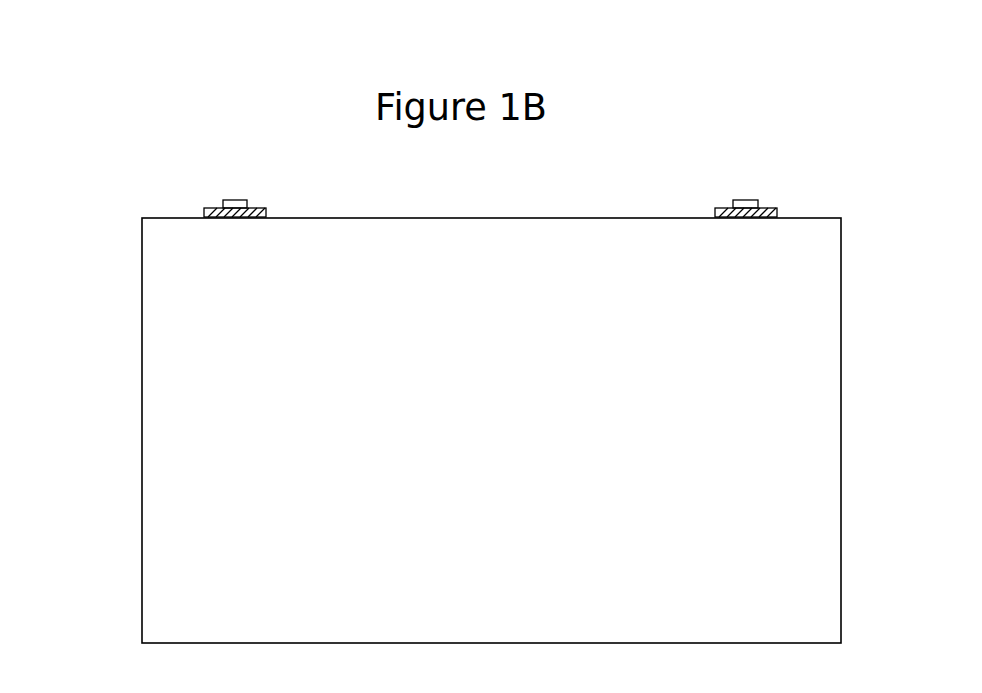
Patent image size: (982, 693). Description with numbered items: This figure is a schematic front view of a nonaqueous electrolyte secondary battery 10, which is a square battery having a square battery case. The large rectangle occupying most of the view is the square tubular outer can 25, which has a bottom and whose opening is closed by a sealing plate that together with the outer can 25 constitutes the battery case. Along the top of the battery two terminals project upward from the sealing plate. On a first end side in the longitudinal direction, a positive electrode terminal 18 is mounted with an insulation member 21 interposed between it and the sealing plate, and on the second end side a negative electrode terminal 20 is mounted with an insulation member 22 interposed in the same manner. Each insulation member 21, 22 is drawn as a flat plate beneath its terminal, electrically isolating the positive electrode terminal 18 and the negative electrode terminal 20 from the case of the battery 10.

The nonaqueous electrolyte secondary battery 10 is at (101, 225).
The positive electrode terminal 18 is at (740, 200).
The negative electrode terminal 20 is at (225, 200).
The insulation member 21 is at (767, 210).
The insulation member 22 is at (257, 210).
The outer can 25 is at (197, 385).